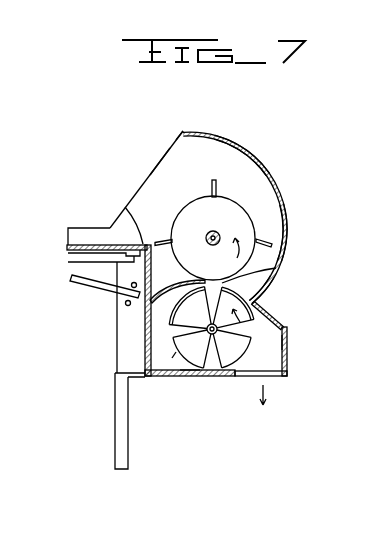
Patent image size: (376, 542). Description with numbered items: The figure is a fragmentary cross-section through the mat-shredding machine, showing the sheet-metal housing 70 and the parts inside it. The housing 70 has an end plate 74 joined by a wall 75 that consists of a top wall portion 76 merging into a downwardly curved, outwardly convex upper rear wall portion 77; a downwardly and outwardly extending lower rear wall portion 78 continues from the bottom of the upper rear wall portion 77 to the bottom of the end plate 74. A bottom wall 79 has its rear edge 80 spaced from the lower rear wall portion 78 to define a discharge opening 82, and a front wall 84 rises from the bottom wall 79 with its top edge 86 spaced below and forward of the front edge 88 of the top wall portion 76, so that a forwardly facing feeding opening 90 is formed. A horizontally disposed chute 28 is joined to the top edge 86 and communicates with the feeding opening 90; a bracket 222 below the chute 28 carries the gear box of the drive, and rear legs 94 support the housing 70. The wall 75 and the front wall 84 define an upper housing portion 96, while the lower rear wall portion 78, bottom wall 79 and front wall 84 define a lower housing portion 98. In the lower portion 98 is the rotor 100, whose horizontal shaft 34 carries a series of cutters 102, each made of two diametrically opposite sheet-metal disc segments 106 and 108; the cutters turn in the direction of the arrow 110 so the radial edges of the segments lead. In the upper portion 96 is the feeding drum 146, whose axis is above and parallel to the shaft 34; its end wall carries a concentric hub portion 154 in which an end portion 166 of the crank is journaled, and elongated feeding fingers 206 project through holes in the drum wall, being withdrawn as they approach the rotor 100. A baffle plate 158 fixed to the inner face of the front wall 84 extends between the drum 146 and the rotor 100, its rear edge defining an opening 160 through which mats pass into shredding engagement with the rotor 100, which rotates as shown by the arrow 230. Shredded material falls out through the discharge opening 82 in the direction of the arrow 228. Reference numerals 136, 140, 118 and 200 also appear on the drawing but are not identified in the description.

The housing 70 is at (295, 163).
The wall 75 is at (257, 151).
The upper portion of housing 96 is at (230, 143).
The upper rear wall portion 77 is at (290, 229).
The textured strip 200 is at (276, 288).
The front edge of top wall portion 88 is at (184, 132).
The top wall portion 76 is at (183, 131).
The feeding opening 90 is at (160, 161).
The top edge of front wall 86 is at (125, 207).
The chute 28 is at (97, 244).
The bracket 222 is at (68, 262).
The support bar 136 is at (78, 282).
The vertical plate 140 is at (116, 320).
The end plate 74 is at (115, 364).
The rear legs 94 is at (115, 430).
The front wall 84 is at (143, 334).
The lower portion of housing 98 is at (158, 364).
The bottom wall 79 is at (187, 376).
The rear edge of bottom wall 80 is at (233, 374).
The rotor 100 is at (172, 358).
The discharge opening 82 is at (274, 374).
The lower rear wall portion 78 is at (277, 317).
The opening 160 is at (276, 270).
The baffle plate 158 is at (181, 285).
The feeding drum 146 is at (192, 198).
The feeding fingers 206 is at (217, 187).
The hub portion 154 is at (215, 232).
The end portion of crank 166 is at (209, 242).
The arrow 230 is at (222, 258).
The shaft 34 is at (215, 328).
The impeller vane 118 is at (189, 299).
The arrow 110 is at (242, 322).
The segment 106 is at (245, 345).
The segment 108 is at (178, 323).
The cutter 102 is at (289, 347).
The arrow 228 is at (265, 408).